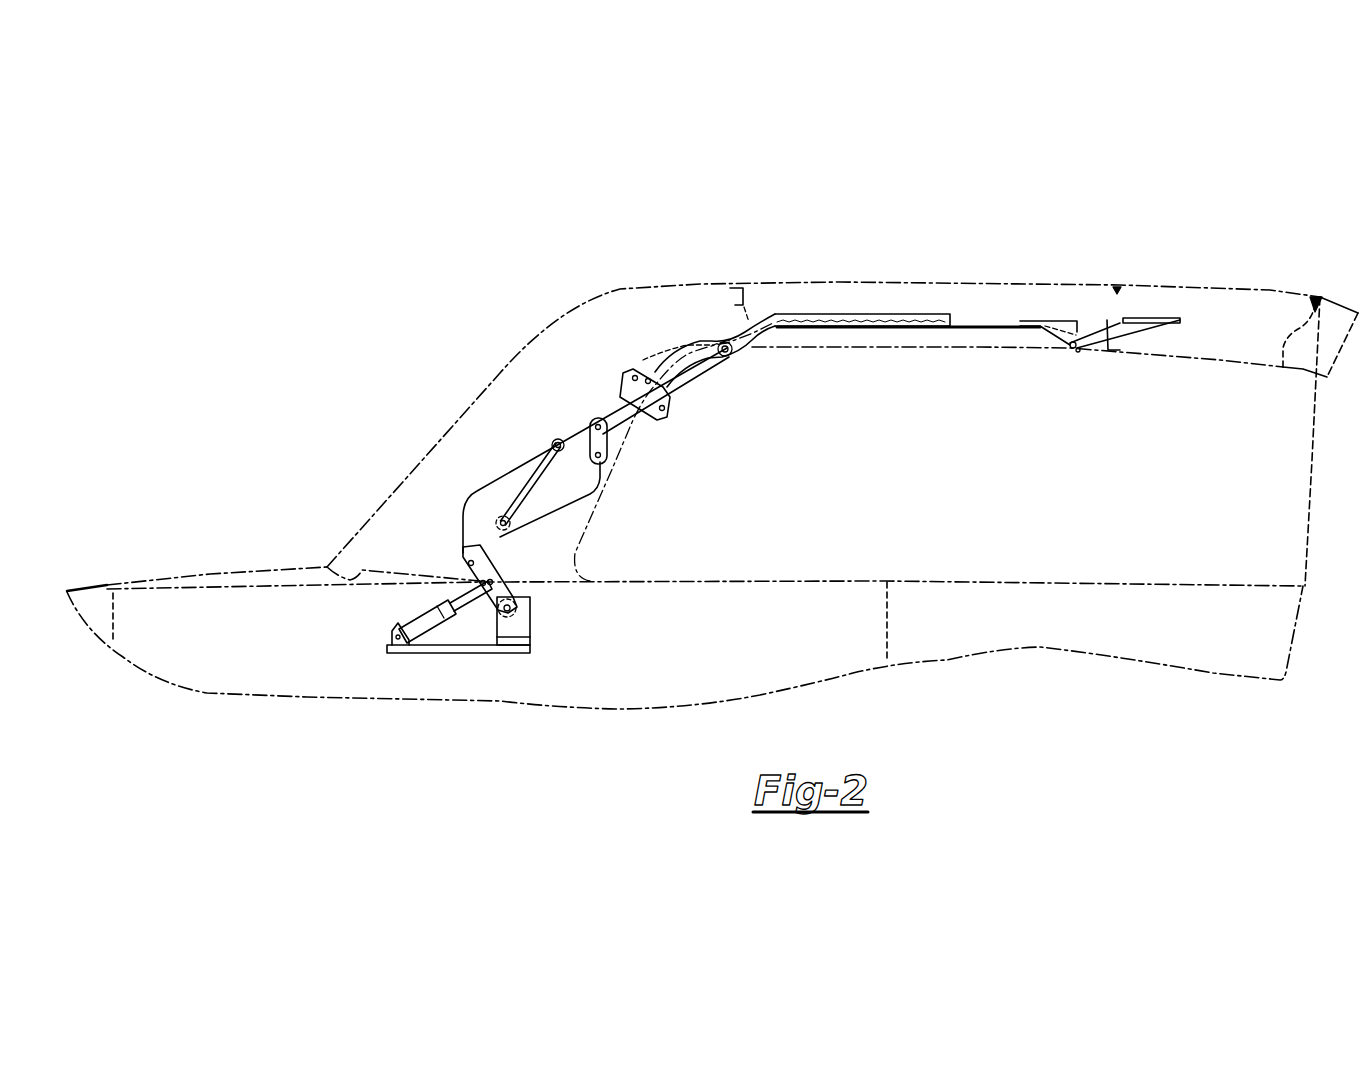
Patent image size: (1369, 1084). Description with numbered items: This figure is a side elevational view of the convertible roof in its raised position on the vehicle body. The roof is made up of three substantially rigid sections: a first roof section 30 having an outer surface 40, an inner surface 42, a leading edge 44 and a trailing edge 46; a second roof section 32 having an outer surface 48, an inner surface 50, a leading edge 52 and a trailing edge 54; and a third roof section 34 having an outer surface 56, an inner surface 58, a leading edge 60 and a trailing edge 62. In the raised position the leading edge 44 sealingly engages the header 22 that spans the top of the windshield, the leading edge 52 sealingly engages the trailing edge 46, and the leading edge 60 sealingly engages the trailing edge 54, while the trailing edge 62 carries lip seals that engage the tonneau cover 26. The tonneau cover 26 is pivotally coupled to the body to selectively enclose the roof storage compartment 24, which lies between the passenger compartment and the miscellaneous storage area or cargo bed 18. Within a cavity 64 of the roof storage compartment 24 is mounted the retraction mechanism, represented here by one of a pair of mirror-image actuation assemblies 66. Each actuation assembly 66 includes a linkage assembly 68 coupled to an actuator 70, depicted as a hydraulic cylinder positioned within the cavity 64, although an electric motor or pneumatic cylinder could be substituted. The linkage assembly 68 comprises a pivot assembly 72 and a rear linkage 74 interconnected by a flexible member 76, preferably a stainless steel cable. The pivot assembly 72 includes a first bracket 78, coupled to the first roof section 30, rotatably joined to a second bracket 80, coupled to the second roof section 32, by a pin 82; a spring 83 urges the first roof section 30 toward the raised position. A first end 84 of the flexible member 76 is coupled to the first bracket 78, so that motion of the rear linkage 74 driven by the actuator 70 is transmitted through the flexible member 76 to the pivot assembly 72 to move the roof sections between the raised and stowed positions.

The miscellaneous storage area or cargo bed 18 is at (83, 598).
The header 22 is at (1303, 365).
The roof storage compartment 24 is at (196, 640).
The tonneau cover 26 is at (210, 570).
The first roof section 30 is at (1220, 313).
The second roof section 32 is at (1064, 295).
The third roof section 34 is at (588, 337).
The outer surface 40 is at (1265, 288).
The inner surface 42 is at (1230, 363).
The leading edge 44 is at (1320, 297).
The trailing edge 46 is at (1107, 337).
The outer surface 48 is at (817, 281).
The inner surface 50 is at (930, 352).
The leading edge 52 is at (1108, 349).
The trailing edge 54 is at (735, 305).
The outer surface 56 is at (507, 368).
The inner surface 58 is at (607, 485).
The leading edge 60 is at (765, 348).
The trailing edge 62 is at (327, 563).
The cavity 64 is at (310, 684).
The actuation assembly 66 is at (547, 597).
The linkage assembly 68 is at (668, 422).
The actuator 70 is at (415, 622).
The pivot assembly 72 is at (1058, 364).
The rear linkage 74 is at (805, 331).
The flexible member 76 is at (970, 325).
The first bracket 78 is at (1150, 327).
The second bracket 80 is at (1053, 322).
The pin 82 is at (1075, 352).
The spring 83 is at (1070, 348).
The first end 84 is at (1106, 330).